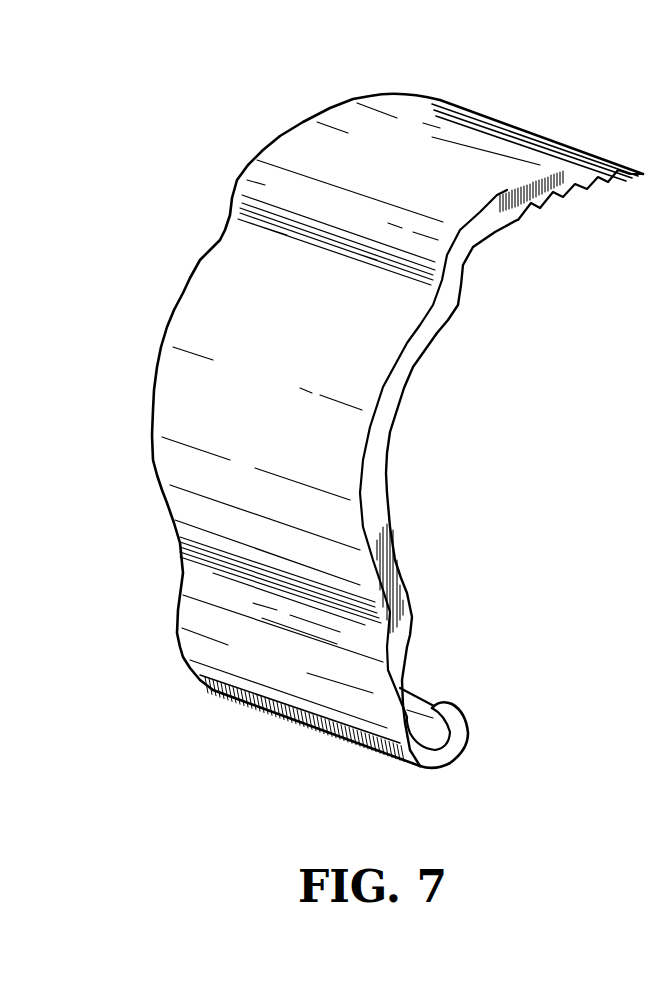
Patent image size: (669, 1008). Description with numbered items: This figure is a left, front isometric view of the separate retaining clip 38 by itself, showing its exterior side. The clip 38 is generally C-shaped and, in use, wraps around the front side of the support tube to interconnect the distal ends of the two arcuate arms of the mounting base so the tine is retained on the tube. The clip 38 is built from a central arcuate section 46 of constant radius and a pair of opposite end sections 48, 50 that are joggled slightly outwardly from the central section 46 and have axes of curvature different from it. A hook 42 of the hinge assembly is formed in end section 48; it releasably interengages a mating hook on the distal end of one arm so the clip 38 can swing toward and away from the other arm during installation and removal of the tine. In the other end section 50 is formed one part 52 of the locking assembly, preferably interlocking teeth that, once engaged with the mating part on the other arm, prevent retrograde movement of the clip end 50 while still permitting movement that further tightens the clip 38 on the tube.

The retaining clip 38 is at (160, 200).
The hook 42 is at (452, 719).
The central arcuate section 46 is at (168, 464).
The end section 48 is at (298, 698).
The end section 50 is at (312, 130).
The part of locking assembly 52 is at (566, 203).